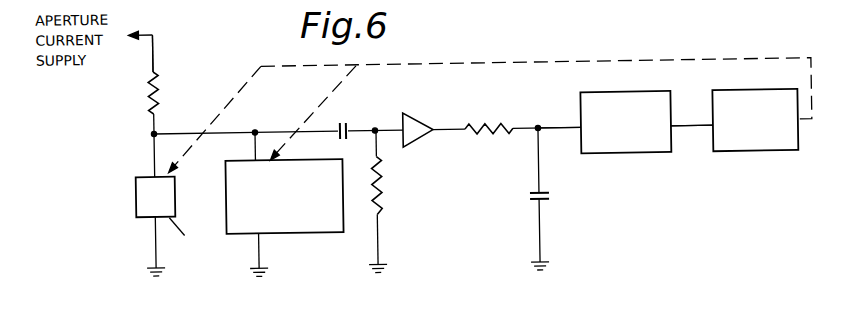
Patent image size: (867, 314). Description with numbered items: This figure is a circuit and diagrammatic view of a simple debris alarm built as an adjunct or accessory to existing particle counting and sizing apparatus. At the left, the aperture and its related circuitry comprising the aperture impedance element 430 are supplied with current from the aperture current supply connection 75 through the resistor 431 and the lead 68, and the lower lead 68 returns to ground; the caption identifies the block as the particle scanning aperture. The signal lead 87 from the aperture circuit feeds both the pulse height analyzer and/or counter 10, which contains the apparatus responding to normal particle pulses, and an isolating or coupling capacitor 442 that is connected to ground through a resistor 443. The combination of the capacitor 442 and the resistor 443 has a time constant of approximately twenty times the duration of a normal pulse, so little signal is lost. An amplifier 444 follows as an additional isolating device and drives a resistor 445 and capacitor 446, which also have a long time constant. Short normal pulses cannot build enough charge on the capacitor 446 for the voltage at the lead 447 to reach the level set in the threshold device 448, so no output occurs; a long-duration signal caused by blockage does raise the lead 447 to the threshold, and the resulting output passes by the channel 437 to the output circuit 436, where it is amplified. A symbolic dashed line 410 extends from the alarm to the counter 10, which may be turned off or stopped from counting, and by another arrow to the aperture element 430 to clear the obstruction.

The resistor 431 is at (158, 82).
The aperture current supply conductor 75 is at (131, 99).
The lead 68 is at (152, 152).
The aperture impedance element 430 is at (135, 200).
The symbolic line 410 is at (707, 69).
The lead 87 is at (219, 139).
The pulse height analyzer and/or counter 10 is at (314, 240).
The coupling capacitor 442 is at (344, 126).
The resistor 443 is at (381, 203).
The amplifier 444 is at (420, 121).
The resistor 445 is at (488, 145).
The capacitor 446 is at (527, 202).
The lead 447 is at (565, 133).
The threshold device 448 is at (641, 160).
The channel 437 is at (695, 134).
The output circuit 436 is at (757, 160).